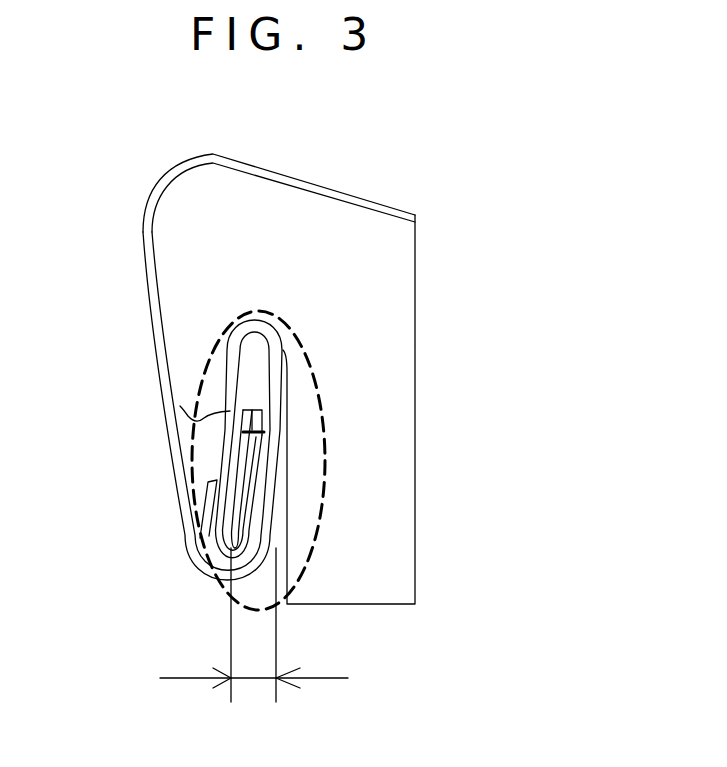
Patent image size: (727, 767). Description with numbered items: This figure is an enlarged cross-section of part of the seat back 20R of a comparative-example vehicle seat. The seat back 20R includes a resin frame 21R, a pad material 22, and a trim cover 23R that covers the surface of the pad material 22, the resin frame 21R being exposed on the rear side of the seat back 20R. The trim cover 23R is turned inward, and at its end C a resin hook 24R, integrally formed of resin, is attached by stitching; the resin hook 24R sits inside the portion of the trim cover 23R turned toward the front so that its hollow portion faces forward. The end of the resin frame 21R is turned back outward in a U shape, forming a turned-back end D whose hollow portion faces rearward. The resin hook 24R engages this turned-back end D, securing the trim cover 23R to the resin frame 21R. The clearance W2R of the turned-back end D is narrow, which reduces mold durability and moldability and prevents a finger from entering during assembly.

The seat back 20R is at (307, 123).
The resin frame 21R is at (286, 508).
The pad material 22 is at (397, 452).
The trim cover 23R is at (145, 230).
The resin hook 24R is at (204, 487).
The end of the trim cover C is at (264, 429).
The turned-back end of the resin frame D is at (325, 460).
The clearance of the turned-back end W2R is at (292, 625).